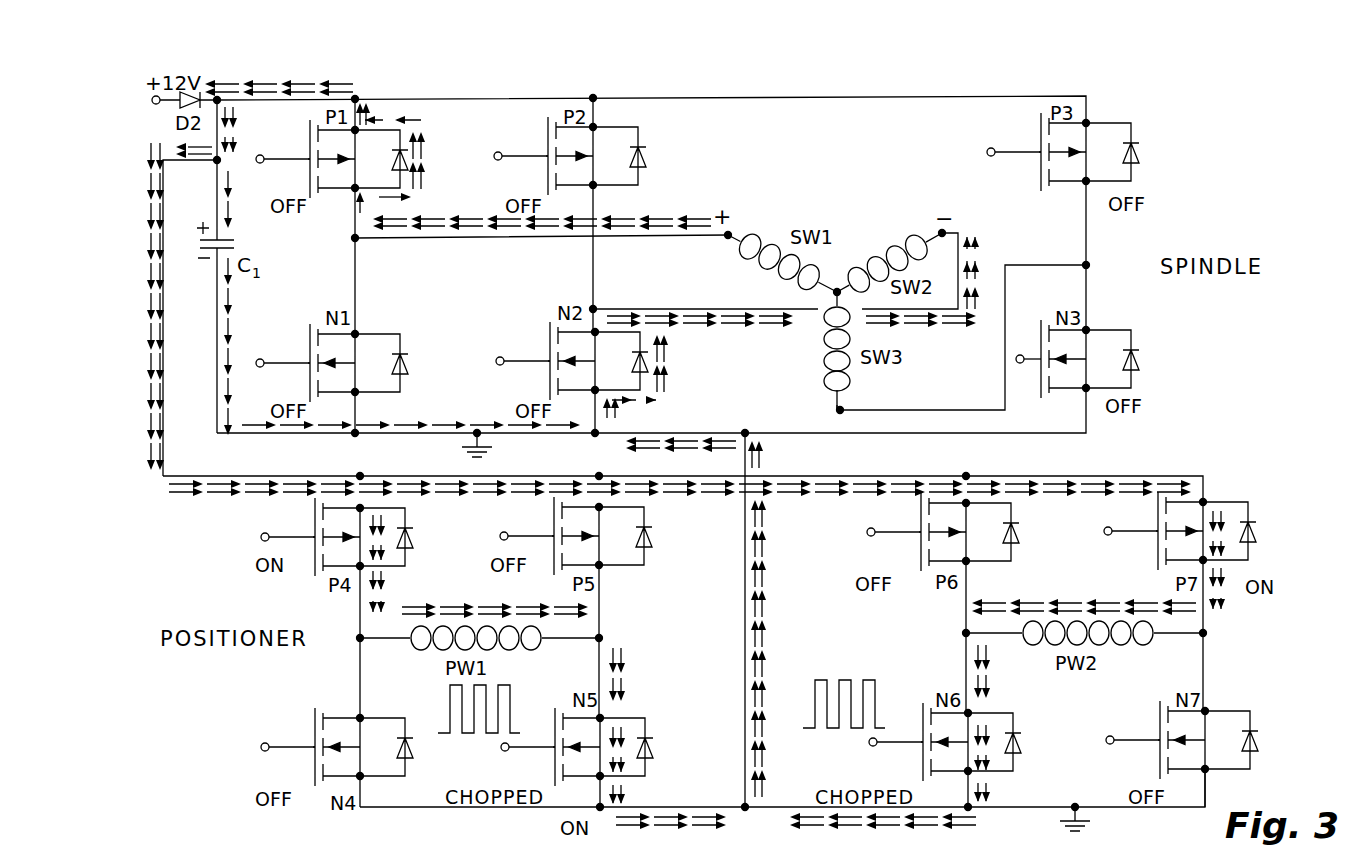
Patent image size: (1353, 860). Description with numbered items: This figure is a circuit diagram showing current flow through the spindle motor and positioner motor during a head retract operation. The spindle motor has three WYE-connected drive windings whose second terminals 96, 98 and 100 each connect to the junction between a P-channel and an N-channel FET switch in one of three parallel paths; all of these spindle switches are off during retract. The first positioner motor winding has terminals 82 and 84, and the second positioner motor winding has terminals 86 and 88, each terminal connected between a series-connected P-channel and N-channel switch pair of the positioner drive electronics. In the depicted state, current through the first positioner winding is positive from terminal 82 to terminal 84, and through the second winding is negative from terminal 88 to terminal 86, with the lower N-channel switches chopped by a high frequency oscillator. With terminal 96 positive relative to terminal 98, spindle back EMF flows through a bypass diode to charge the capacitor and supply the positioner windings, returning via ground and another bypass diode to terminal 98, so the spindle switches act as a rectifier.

The winding terminal 82 is at (357, 640).
The winding terminal 84 is at (602, 635).
The winding terminal 86 is at (963, 634).
The winding terminal 88 is at (1206, 634).
The second terminal of spindle motor winding SW1 96 is at (728, 239).
The second terminal of spindle motor winding SW2 98 is at (945, 229).
The second terminal of spindle motor winding SW3 100 is at (836, 410).